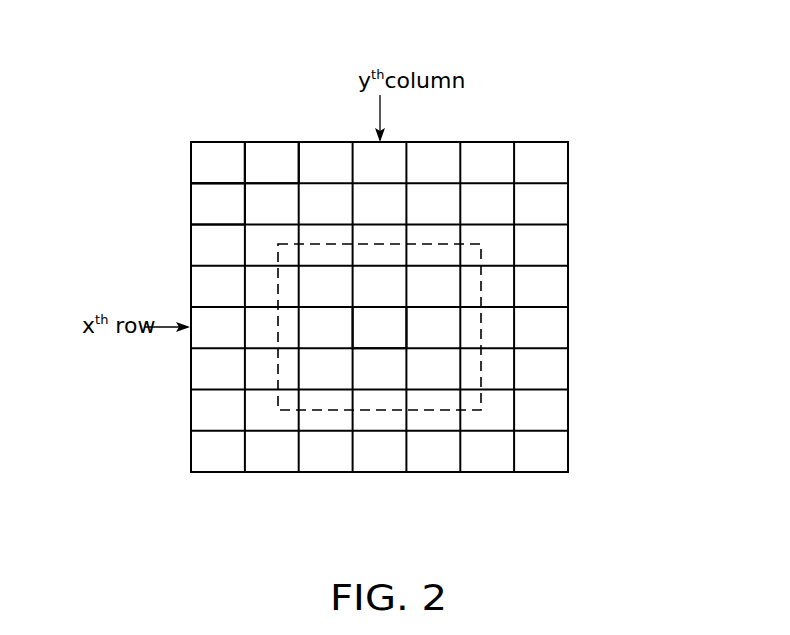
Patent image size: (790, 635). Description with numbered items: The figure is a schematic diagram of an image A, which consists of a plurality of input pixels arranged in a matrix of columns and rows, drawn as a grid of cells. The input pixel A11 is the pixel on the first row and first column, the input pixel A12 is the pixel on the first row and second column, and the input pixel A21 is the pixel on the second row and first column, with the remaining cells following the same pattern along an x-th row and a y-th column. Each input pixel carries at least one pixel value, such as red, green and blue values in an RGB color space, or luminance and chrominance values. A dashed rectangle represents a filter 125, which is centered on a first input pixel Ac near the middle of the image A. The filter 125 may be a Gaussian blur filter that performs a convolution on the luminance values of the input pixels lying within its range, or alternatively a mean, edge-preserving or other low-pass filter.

The image A is at (541, 142).
The input pixel A11 is at (216, 148).
The input pixel A12 is at (272, 148).
The input pixel A21 is at (204, 207).
The first input pixel Ac is at (380, 330).
The filter 125 is at (481, 325).